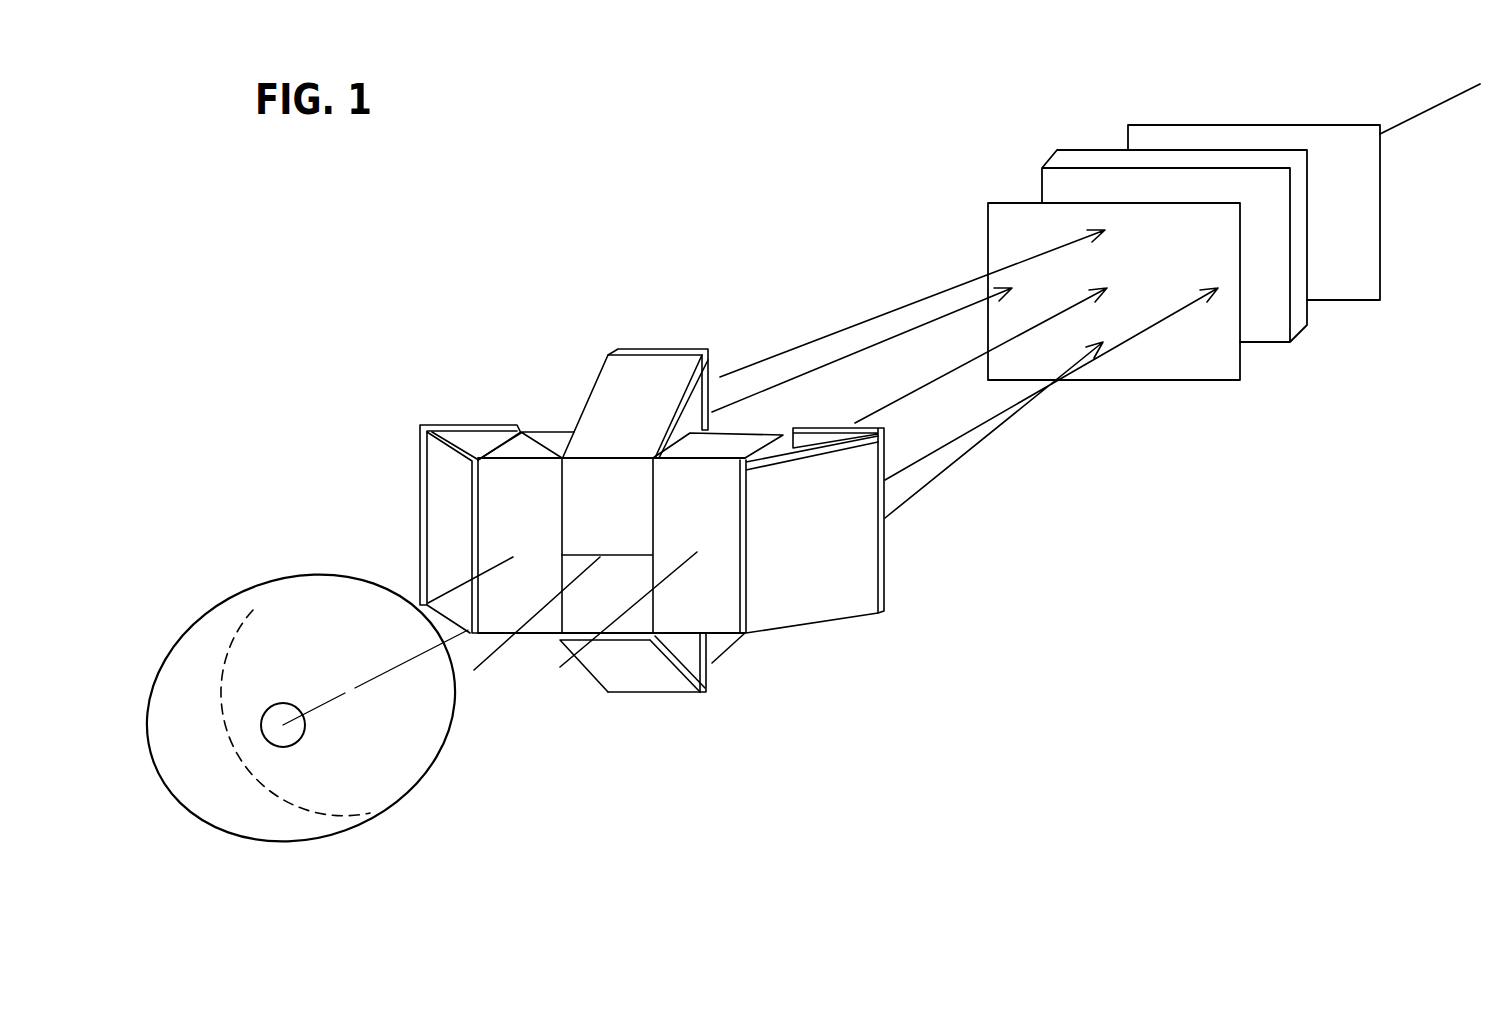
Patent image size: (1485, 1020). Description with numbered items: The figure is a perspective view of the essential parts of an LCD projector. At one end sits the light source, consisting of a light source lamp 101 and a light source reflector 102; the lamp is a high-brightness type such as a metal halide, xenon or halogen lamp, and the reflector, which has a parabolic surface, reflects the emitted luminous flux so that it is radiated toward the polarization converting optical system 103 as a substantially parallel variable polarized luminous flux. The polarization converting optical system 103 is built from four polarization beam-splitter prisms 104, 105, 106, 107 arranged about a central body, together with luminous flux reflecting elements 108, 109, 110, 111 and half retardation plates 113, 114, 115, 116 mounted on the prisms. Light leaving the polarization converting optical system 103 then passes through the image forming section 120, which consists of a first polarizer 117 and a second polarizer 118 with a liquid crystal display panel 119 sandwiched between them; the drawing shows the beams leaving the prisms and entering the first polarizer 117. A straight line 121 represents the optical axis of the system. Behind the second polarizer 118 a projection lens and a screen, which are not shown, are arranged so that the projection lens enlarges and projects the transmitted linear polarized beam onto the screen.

The light source lamp 101 is at (213, 636).
The light source reflector 102 is at (302, 737).
The polarization converting optical system 103 is at (712, 795).
The polarization beam-splitter prism 104 is at (507, 637).
The polarization beam-splitter prism 105 is at (747, 433).
The polarization beam-splitter prism 106 is at (638, 490).
The polarization beam-splitter prism 107 is at (605, 620).
The luminous flux reflecting element 108 is at (425, 516).
The luminous flux reflecting element 109 is at (843, 625).
The luminous flux reflecting element 110 is at (594, 385).
The luminous flux reflecting element 111 is at (668, 682).
The ½ retardation plate 113 is at (420, 448).
The ½ retardation plate 114 is at (887, 578).
The ½ retardation plate 115 is at (658, 345).
The ½ retardation plate 116 is at (712, 678).
The first polarizer 117 is at (987, 252).
The second polarizer 118 is at (1128, 138).
The liquid crystal display panel 119 is at (1042, 172).
The image forming section 120 is at (1320, 475).
The optical axis 121 is at (1428, 114).